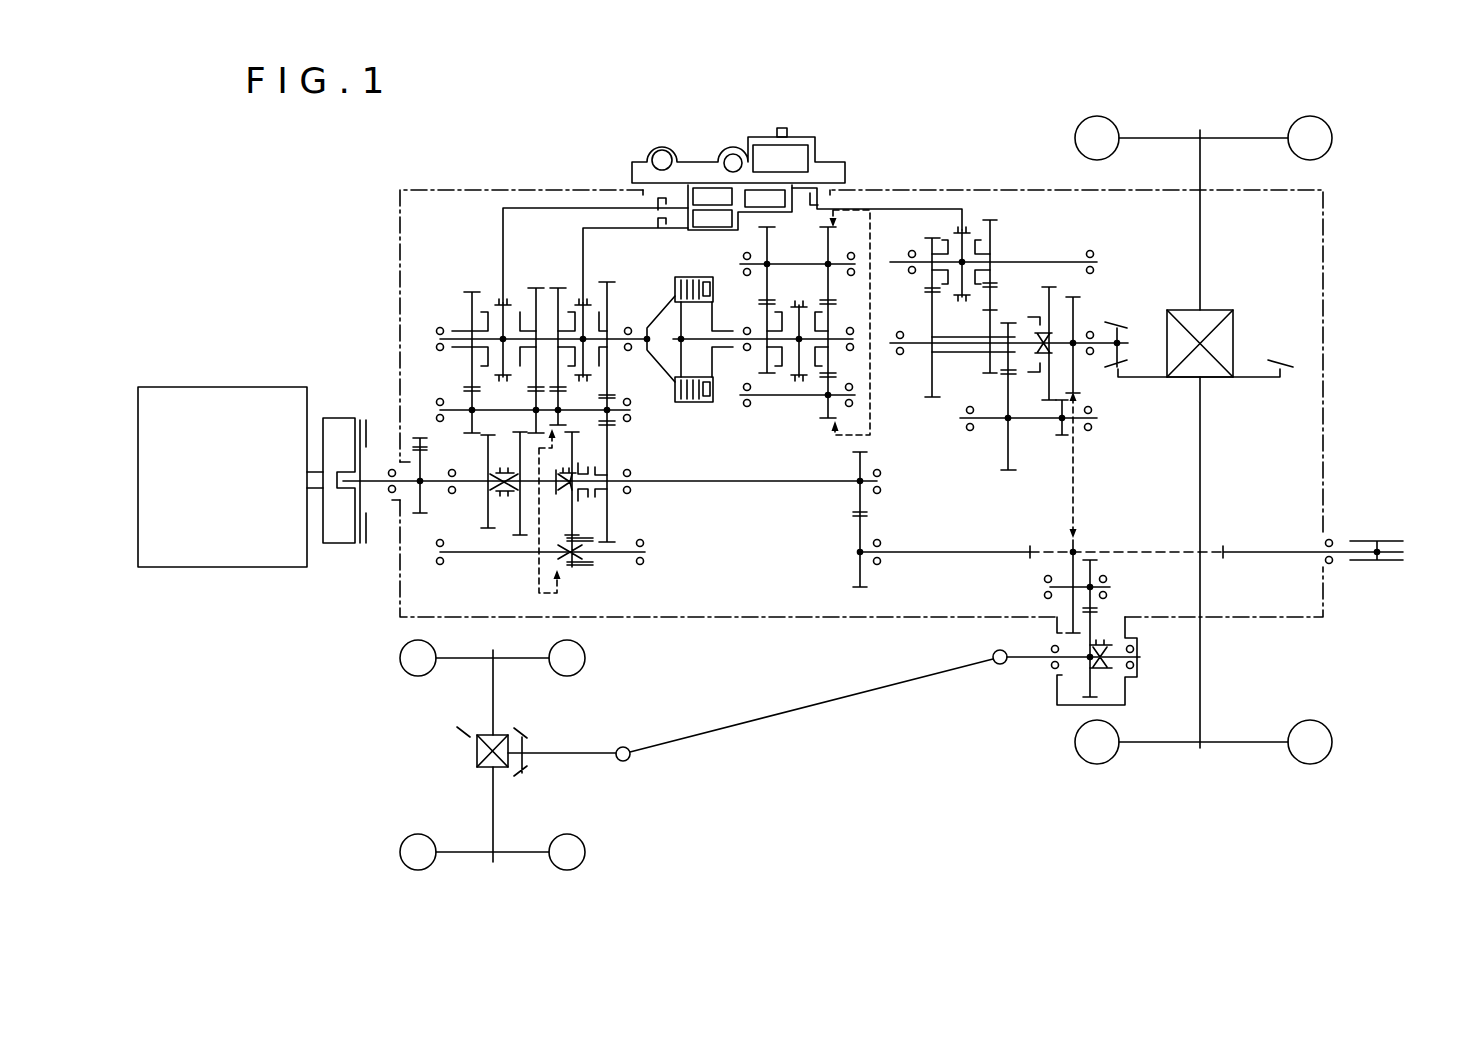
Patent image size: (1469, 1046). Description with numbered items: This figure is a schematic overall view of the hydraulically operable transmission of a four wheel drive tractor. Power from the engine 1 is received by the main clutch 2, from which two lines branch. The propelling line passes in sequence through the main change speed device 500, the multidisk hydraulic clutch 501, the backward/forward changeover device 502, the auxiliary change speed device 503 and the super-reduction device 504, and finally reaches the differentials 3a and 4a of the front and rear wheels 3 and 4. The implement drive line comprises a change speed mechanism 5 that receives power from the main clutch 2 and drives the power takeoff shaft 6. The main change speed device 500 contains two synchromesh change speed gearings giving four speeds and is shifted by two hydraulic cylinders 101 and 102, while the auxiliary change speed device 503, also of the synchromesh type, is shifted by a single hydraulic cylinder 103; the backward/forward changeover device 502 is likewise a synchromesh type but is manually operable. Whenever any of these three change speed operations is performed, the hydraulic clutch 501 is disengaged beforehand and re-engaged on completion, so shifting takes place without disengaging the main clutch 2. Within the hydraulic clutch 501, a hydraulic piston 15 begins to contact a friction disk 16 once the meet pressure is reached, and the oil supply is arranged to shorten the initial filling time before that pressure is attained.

The engine 1 is at (216, 387).
The main clutch 2 is at (346, 417).
The front wheels 3 is at (589, 661).
The differential of front wheels 3a is at (475, 752).
The rear wheels 4 is at (1325, 128).
The differential of rear wheels 4a is at (1235, 328).
The change speed mechanism 5 is at (510, 537).
The power takeoff shaft 6 is at (1378, 543).
The hydraulic piston 15 is at (700, 406).
The friction disk 16 is at (692, 304).
The hydraulic cylinder 101 is at (712, 227).
The hydraulic cylinder 102 is at (714, 196).
The hydraulic cylinder 103 is at (774, 200).
The main change speed device 500 is at (481, 284).
The multidisk hydraulic clutch 501 is at (673, 277).
The backward/forward changeover device 502 is at (787, 402).
The auxiliary change speed device 503 is at (997, 246).
The super-reduction device 504 is at (1030, 304).